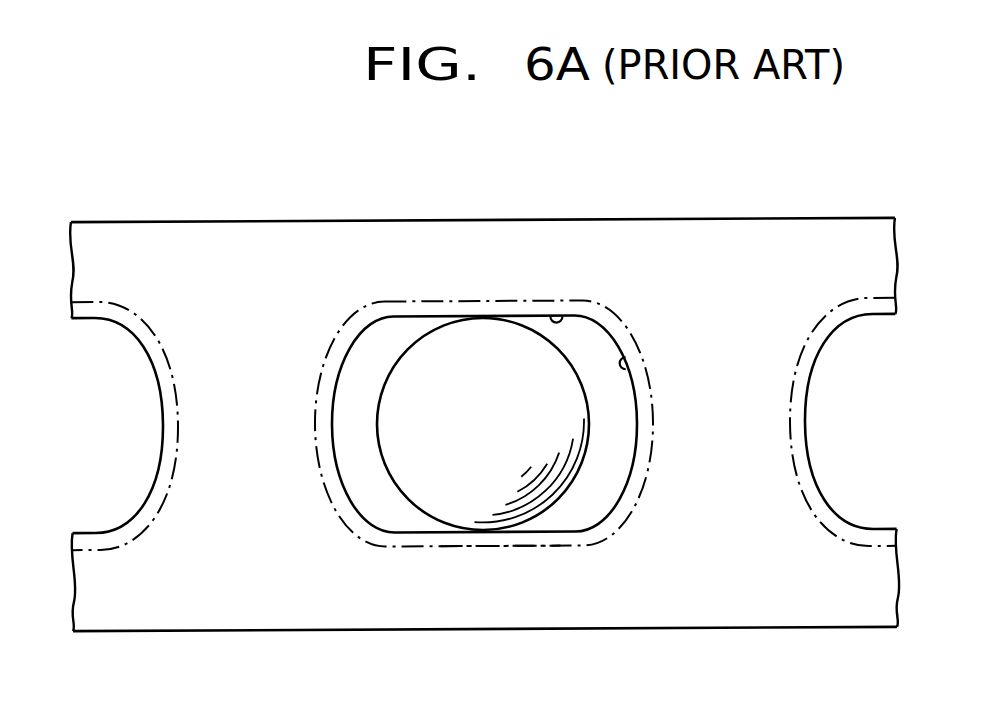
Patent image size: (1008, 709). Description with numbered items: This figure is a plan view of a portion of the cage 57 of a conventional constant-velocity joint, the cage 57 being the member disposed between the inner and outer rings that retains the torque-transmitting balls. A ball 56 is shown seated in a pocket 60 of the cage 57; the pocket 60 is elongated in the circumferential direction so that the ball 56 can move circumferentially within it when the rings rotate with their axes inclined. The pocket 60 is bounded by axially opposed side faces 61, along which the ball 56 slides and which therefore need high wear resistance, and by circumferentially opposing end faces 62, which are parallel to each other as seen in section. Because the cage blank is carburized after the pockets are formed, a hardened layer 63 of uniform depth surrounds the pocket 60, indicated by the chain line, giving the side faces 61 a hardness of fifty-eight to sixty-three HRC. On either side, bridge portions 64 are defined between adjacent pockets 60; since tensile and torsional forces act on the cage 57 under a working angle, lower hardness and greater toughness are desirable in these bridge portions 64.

The ball 56 is at (502, 393).
The cage 57 is at (233, 218).
The pocket 60 is at (397, 327).
The side face 61 is at (561, 315).
The end face 62 is at (621, 362).
The hardened layer 63 is at (517, 543).
The bridge portion 64 is at (200, 436).